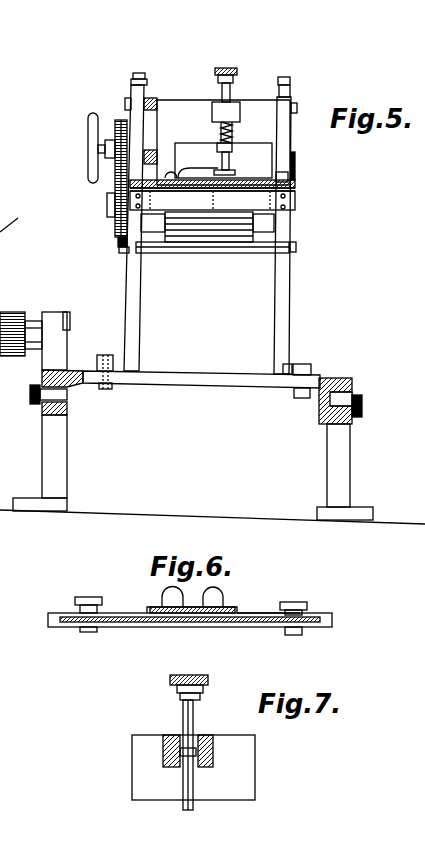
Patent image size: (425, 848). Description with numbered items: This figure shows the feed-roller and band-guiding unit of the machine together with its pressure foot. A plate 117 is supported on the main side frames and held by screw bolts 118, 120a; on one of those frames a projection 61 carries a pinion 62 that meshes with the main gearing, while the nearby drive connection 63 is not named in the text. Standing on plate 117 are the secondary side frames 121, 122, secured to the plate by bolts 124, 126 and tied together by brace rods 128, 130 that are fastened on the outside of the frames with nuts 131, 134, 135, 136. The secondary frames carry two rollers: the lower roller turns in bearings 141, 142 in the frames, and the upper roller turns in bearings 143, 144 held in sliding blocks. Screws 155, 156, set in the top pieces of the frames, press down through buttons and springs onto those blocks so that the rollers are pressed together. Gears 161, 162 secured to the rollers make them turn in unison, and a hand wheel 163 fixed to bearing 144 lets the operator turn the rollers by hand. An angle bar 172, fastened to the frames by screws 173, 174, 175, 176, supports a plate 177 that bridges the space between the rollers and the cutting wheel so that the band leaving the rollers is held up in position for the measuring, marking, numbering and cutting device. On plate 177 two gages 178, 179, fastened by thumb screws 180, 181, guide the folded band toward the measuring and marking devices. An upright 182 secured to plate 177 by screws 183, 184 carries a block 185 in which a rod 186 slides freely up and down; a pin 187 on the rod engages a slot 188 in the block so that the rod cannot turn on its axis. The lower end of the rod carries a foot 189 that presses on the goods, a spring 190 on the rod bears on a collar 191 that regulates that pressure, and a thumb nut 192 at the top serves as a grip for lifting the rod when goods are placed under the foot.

In FIG. 5, the projection 61 is at (64, 319).
In FIG. 5, the pinion 62 is at (20, 311).
In FIG. 5, the drive connection 63 is at (10, 224).
In FIG. 5, the plate 117 is at (166, 365).
In FIG. 5, the screw bolt 118 is at (362, 398).
In FIG. 5, the screw bolt 120a is at (36, 397).
In FIG. 5, the secondary side frame 121 is at (291, 287).
In FIG. 5, the secondary side frame 122 is at (136, 297).
In FIG. 5, the bolt 124 is at (300, 398).
In FIG. 5, the bolt 126 is at (106, 389).
In FIG. 5, the brace rod 128 is at (233, 246).
In FIG. 5, the brace rod 130 is at (150, 98).
In FIG. 5, the nut 131 is at (119, 251).
In FIG. 5, the nut 134 is at (127, 99).
In FIG. 5, the nut 135 is at (297, 106).
In FIG. 5, the nut 136 is at (296, 248).
In FIG. 5, the bearing 141 is at (297, 209).
In FIG. 5, the bearing 142 is at (107, 202).
In FIG. 5, the bearing 143 is at (296, 160).
In FIG. 5, the bearing 144 is at (95, 176).
In FIG. 5, the screw 155 is at (289, 80).
In FIG. 5, the screw 156 is at (154, 57).
In FIG. 5, the gear 161 is at (116, 230).
In FIG. 5, the gear 162 is at (117, 122).
In FIG. 5, the hand wheel 163 is at (91, 135).
In FIG. 5, the angle bar 172 is at (259, 201).
In FIG. 5, the screw 173 is at (297, 189).
In FIG. 5, the screw 174 is at (297, 200).
In FIG. 5, the screw 175 is at (170, 201).
In FIG. 5, the screw 176 is at (136, 242).
In FIG. 6, the plate 177 is at (128, 630).
In FIG. 6, the gage 178 is at (145, 612).
In FIG. 6, the gage 179 is at (262, 601).
In FIG. 6, the thumb screw 180 is at (86, 597).
In FIG. 6, the thumb screw 181 is at (304, 610).
In FIG. 5, the upright 182 is at (223, 142).
In FIG. 7, the upright 182 is at (194, 767).
In FIG. 5, the screw 183 is at (297, 180).
In FIG. 5, the screw 184 is at (222, 152).
In FIG. 5, the block 185 is at (235, 108).
In FIG. 7, the block 185 is at (180, 748).
In FIG. 5, the rod 186 is at (223, 160).
In FIG. 7, the rod 186 is at (193, 720).
In FIG. 7, the pin 187 is at (180, 768).
In FIG. 7, the slot 188 is at (213, 742).
In FIG. 5, the foot 189 is at (257, 180).
In FIG. 5, the spring 190 is at (220, 128).
In FIG. 5, the collar 191 is at (216, 201).
In FIG. 5, the thumb nut 192 is at (238, 69).
In FIG. 6, the thumb nut 192 is at (201, 627).
In FIG. 7, the thumb nut 192 is at (206, 686).